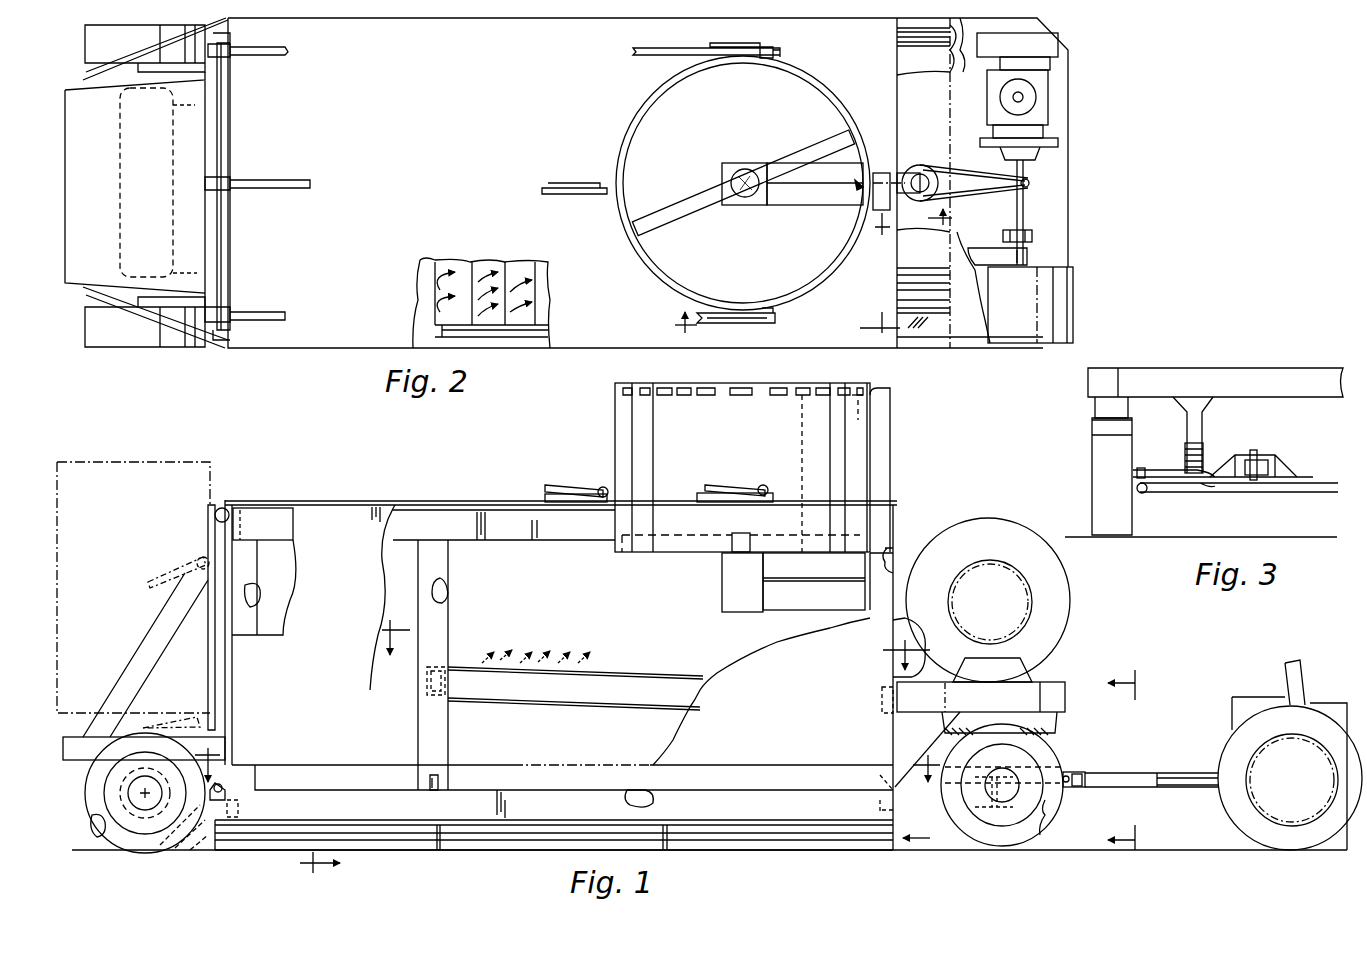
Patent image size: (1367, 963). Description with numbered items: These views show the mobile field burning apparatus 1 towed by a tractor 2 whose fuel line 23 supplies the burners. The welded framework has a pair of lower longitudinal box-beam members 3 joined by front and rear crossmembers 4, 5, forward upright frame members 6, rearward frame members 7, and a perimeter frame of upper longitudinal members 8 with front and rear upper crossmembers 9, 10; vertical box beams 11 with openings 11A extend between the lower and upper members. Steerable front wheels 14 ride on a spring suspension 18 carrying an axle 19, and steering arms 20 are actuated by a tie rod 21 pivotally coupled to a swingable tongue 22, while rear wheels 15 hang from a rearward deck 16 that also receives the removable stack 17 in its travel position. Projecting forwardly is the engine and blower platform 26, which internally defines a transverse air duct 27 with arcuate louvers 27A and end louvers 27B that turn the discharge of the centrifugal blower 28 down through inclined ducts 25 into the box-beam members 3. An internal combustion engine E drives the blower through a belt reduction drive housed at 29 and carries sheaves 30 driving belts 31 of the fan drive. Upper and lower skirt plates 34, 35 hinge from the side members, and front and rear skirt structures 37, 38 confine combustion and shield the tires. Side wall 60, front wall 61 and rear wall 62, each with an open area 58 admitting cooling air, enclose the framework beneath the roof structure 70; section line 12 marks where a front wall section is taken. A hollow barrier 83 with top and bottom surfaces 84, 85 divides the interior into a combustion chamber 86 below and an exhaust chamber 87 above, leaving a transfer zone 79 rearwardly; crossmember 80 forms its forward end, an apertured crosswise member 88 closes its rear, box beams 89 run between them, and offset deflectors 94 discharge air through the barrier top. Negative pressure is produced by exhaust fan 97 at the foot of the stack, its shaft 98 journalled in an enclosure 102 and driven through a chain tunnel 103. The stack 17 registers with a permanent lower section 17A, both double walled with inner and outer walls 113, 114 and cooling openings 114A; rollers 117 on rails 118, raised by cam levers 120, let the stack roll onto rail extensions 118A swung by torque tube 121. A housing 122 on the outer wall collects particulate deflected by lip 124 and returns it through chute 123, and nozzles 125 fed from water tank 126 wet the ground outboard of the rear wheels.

In FIG. 2, the mobile field burning apparatus 1 is at (548, 368).
In FIG. 1, the mobile field burning apparatus 1 is at (497, 476).
In FIG. 1, the tractor 2 is at (1258, 697).
In FIG. 1, the lower longitudinal members 3 is at (628, 797).
In FIG. 1, the front crossmember 4 is at (567, 789).
In FIG. 1, the rear crossmember 5 is at (240, 805).
In FIG. 1, the upright frame members 6 is at (893, 555).
In FIG. 1, the rearward frame members 7 is at (258, 598).
In FIG. 2, the upper longitudinal members 8 is at (505, 350).
In FIG. 1, the upper longitudinal members 8 is at (598, 530).
In FIG. 1, the front upper crossmember 9 is at (654, 642).
In FIG. 1, the rear upper crossmember 10 is at (250, 524).
In FIG. 1, the vertical box beams 11 is at (440, 615).
In FIG. 1, the openings 11A is at (445, 783).
In FIG. 2, the section line 12- 12 is at (815, 271).
In FIG. 1, the steerable wheels 14 is at (1045, 810).
In FIG. 3, the steerable wheels 14 is at (1105, 460).
In FIG. 2, the wheels 15 is at (132, 338).
In FIG. 1, the wheels 15 is at (92, 820).
In FIG. 2, the rearward extending deck 16 is at (135, 189).
In FIG. 1, the rearward extending deck 16 is at (82, 760).
In FIG. 1, the removable stack 17 is at (150, 452).
In FIG. 1, the permanent stack lower section 17A is at (741, 532).
In FIG. 3, the spring suspension 18 is at (1205, 458).
In FIG. 3, the axle 19 is at (1225, 485).
In FIG. 1, the steering arms 20 is at (982, 815).
In FIG. 3, the steering arms 20 is at (1143, 493).
In FIG. 3, the tie rod 21 is at (1188, 490).
In FIG. 1, the tongue 22 is at (1078, 772).
In FIG. 3, the tongue 22 is at (1258, 482).
In FIG. 1, the fuel line 23 is at (1165, 775).
In FIG. 1, the ducts 25 is at (935, 730).
In FIG. 3, the ducts 25 is at (1100, 410).
In FIG. 2, the engine and blower supporting platform 26 is at (1065, 210).
In FIG. 1, the engine and blower supporting platform 26 is at (1045, 682).
In FIG. 3, the engine and blower supporting platform 26 is at (1172, 368).
In FIG. 2, the air duct 27 is at (917, 255).
In FIG. 1, the air duct 27 is at (948, 697).
In FIG. 2, the arcuate louvers 27A is at (900, 293).
In FIG. 2, the louvers 27B is at (920, 40).
In FIG. 2, the centrifugal blower 28 is at (1030, 305).
In FIG. 1, the centrifugal blower 28 is at (1052, 625).
In FIG. 2, the multiple belt reduction drive 29 is at (1027, 257).
In FIG. 2, the multiple sheaves 30 is at (1030, 186).
In FIG. 2, the belts 31 is at (968, 195).
In FIG. 1, the upper skirt plate 34 is at (512, 848).
In FIG. 1, the second skirt plate 35 is at (533, 848).
In FIG. 1, the front skirt structure 37 is at (905, 838).
In FIG. 1, the rear skirt structure 38 is at (205, 840).
In FIG. 1, the open area 58 is at (305, 770).
In FIG. 1, the side wall 60 is at (545, 765).
In FIG. 2, the front wall 61 is at (900, 105).
In FIG. 1, the front wall 61 is at (900, 603).
In FIG. 1, the rear wall 62 is at (232, 676).
In FIG. 2, the roof structure 70 is at (453, 170).
In FIG. 1, the roof structure 70 is at (415, 500).
In FIG. 1, the transfer zone 79 is at (402, 665).
In FIG. 1, the crossmember 80 is at (872, 692).
In FIG. 1, the barrier 83 is at (650, 678).
In FIG. 2, the top wall surface 84 is at (743, 183).
In FIG. 1, the top wall surface 84 is at (690, 676).
In FIG. 1, the bottom wall surface 85 is at (648, 708).
In FIG. 1, the combustion chamber 86 is at (580, 722).
In FIG. 1, the exhaust chamber 87 is at (630, 618).
In FIG. 2, the crosswise member 88 is at (430, 268).
In FIG. 1, the crosswise member 88 is at (412, 692).
In FIG. 1, the box beams 89 is at (672, 692).
In FIG. 2, the deflectors 94 is at (512, 262).
In FIG. 1, the deflectors 94 is at (575, 668).
In FIG. 2, the exhaust fan 97 is at (700, 210).
In FIG. 1, the exhaust fan 97 is at (668, 553).
In FIG. 2, the fan shaft 98 is at (762, 192).
In FIG. 2, the enclosure 102 is at (745, 205).
In FIG. 1, the enclosure 102 is at (722, 600).
In FIG. 2, the tunnel 103 is at (790, 200).
In FIG. 1, the tunnel 103 is at (802, 598).
In FIG. 2, the inner wall 113 is at (812, 80).
In FIG. 2, the outer wall 114 is at (845, 95).
In FIG. 1, the outer wall 114 is at (612, 460).
In FIG. 1, the openings 114A is at (812, 388).
In FIG. 2, the rollers 117 is at (768, 47).
In FIG. 1, the rollers 117 is at (770, 490).
In FIG. 2, the rails 118 is at (762, 335).
In FIG. 2, the rail extensions 118A is at (208, 300).
In FIG. 1, the rail extensions 118A is at (208, 690).
In FIG. 2, the cam actuating levers 120 is at (725, 43).
In FIG. 1, the cam actuating levers 120 is at (155, 578).
In FIG. 2, the torque tube 121 is at (222, 217).
In FIG. 1, the torque tube 121 is at (220, 490).
In FIG. 2, the housing 122 is at (882, 172).
In FIG. 1, the housing 122 is at (890, 395).
In FIG. 1, the chute 123 is at (890, 450).
In FIG. 2, the lip 124 is at (858, 190).
In FIG. 1, the lip 124 is at (842, 402).
In FIG. 1, the nozzles 125 is at (230, 790).
In FIG. 2, the water tank 126 is at (175, 137).
In FIG. 1, the water tank 126 is at (115, 775).
In FIG. 2, the internal combustion engine E is at (1040, 95).